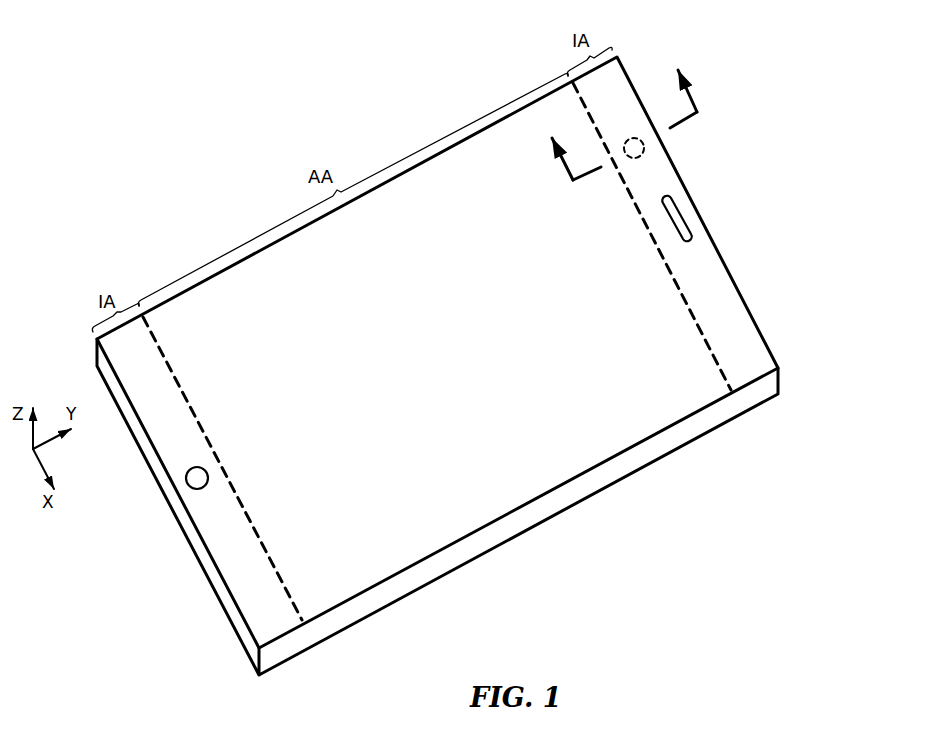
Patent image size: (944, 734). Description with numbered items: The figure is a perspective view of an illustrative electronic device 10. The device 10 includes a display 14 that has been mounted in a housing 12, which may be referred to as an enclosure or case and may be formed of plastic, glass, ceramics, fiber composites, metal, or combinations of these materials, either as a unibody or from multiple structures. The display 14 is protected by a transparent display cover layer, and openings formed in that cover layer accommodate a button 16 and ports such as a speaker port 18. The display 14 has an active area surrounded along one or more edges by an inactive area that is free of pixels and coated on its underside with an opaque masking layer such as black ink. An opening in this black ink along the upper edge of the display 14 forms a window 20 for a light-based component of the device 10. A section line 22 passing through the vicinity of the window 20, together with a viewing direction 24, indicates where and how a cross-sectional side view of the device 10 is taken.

The electronic device 10 is at (803, 175).
The housing 12 is at (780, 378).
The display 14 is at (632, 403).
The button 16 is at (189, 485).
The speaker port 18 is at (684, 222).
The window 20 is at (645, 150).
The line 22 is at (573, 180).
The direction 24 is at (566, 166).